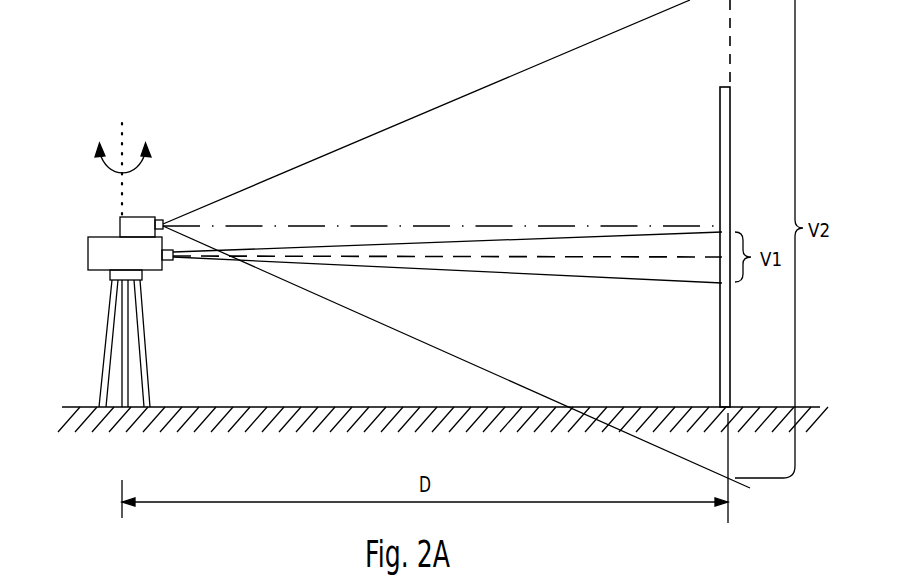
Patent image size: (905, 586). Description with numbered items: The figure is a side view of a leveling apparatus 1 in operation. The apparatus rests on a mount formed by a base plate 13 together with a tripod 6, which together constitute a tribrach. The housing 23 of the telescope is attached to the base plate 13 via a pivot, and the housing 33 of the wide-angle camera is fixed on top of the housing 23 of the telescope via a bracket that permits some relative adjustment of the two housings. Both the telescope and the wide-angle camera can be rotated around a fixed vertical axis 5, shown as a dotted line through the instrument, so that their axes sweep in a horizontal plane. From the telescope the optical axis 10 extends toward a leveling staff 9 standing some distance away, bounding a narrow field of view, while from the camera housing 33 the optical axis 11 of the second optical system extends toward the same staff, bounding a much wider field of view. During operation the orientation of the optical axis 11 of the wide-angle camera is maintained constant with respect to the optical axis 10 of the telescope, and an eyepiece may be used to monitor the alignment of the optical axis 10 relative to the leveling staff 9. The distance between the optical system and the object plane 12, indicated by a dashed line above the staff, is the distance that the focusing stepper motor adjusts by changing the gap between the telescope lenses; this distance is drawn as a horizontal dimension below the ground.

The leveling apparatus 1 is at (70, 166).
The fixed vertical axis 5 is at (122, 123).
The housing of the wide-angle camera 33 is at (120, 219).
The housing of the telescope 23 is at (88, 255).
The base plate 13 is at (110, 277).
The tripod 6 is at (104, 343).
The optical axis of the second optical system 11 is at (534, 226).
The optical axis of the telescope 10 is at (560, 258).
The leveling staff 9 is at (720, 320).
The object plane 12 is at (730, 45).